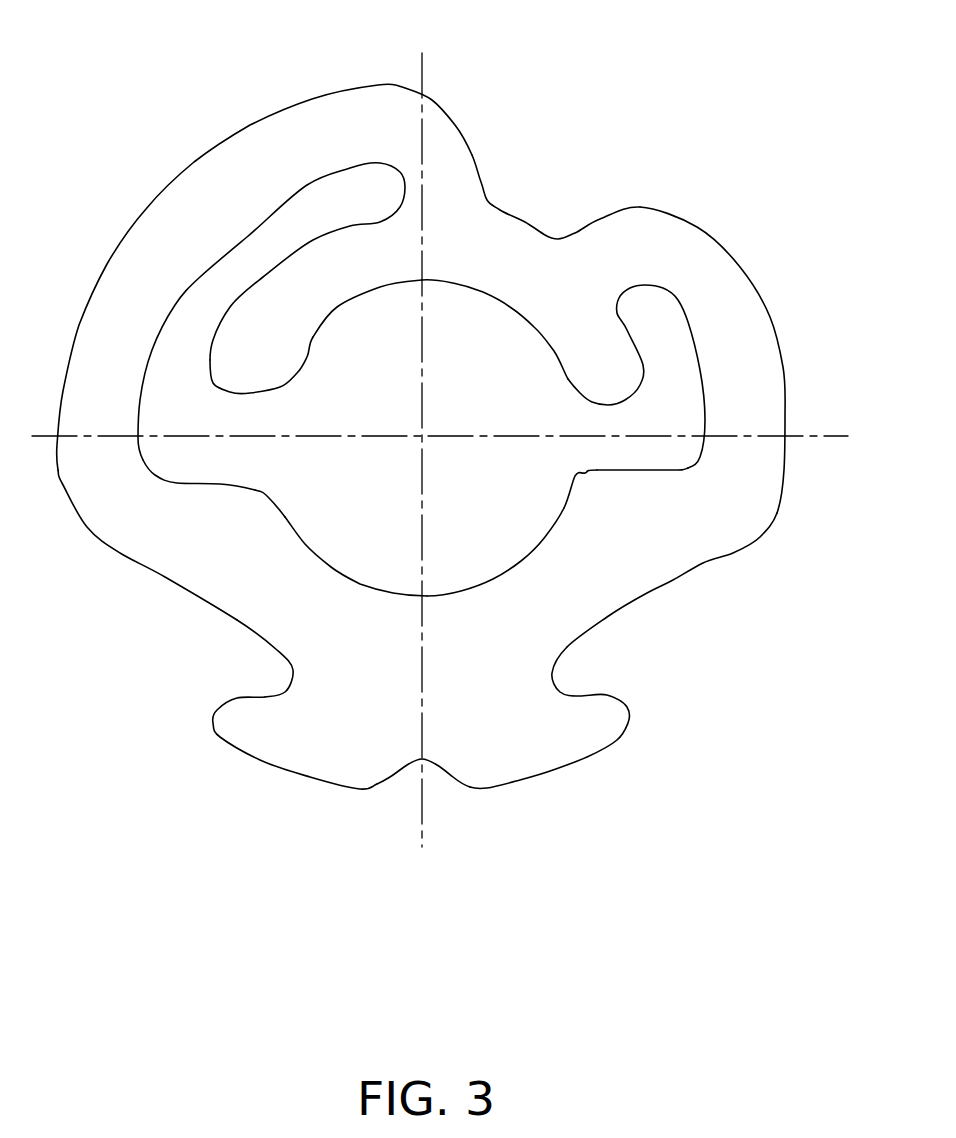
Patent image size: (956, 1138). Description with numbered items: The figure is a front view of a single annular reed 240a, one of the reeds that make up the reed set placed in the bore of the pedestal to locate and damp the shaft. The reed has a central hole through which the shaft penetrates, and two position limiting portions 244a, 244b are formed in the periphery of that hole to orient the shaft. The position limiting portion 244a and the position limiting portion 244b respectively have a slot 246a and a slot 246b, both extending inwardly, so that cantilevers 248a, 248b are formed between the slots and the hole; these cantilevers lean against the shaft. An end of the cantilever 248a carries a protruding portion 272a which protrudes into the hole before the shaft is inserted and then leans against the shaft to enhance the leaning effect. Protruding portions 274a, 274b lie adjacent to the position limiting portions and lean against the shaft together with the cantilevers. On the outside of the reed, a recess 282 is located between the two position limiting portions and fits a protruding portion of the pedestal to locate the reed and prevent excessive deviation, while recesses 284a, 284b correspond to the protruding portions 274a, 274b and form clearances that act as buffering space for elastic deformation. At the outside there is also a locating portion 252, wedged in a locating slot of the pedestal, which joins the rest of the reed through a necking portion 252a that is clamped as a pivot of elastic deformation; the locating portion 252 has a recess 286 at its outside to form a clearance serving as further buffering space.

The annular reed 240a is at (777, 948).
The position limiting portion 244a is at (228, 415).
The position limiting portion 244b is at (607, 447).
The slot 246a is at (268, 228).
The slot 246b is at (662, 347).
The cantilever 248a is at (360, 277).
The cantilever 248b is at (563, 323).
The locating portion 252 is at (453, 740).
The necking portion 252a is at (283, 672).
The protruding portion 272a is at (302, 372).
The protruding portion 274a is at (265, 495).
The protruding portion 274b is at (583, 473).
The recess 282 is at (525, 217).
The recess 284a is at (165, 582).
The recess 284b is at (658, 588).
The recess 286 is at (440, 777).